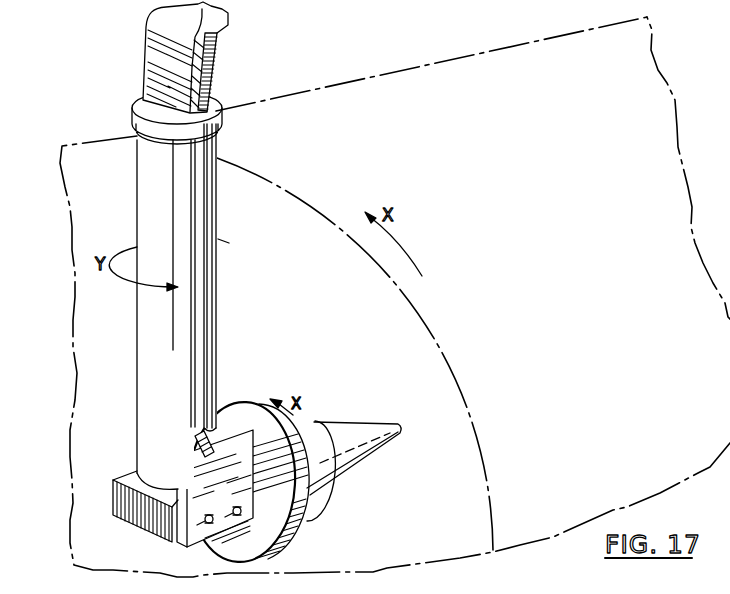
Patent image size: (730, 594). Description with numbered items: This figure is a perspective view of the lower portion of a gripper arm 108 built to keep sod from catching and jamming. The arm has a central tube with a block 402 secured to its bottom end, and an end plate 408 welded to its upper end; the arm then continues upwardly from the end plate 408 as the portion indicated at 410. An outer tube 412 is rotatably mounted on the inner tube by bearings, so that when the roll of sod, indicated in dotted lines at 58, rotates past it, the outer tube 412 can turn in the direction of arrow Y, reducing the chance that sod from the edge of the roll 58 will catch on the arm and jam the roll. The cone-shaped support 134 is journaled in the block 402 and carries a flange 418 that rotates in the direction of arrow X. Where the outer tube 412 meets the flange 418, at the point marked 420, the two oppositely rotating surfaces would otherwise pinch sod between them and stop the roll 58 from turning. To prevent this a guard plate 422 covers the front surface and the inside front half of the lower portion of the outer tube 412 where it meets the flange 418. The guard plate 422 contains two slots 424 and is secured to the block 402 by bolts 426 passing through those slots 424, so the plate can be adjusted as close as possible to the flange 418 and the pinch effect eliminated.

The roll of sod 58 is at (312, 90).
The gripper arm 108 is at (108, 294).
The cone-shaped support 134 is at (359, 429).
The block 402 is at (150, 521).
The end plate 408 is at (134, 120).
The upward continuation of the arm 410 is at (156, 56).
The outer tube 412 is at (136, 213).
The flange 418 is at (298, 518).
The pinch point 420 is at (225, 404).
The guard plate 422 is at (195, 441).
The slots 424 is at (234, 493).
The bolts 426 is at (232, 519).